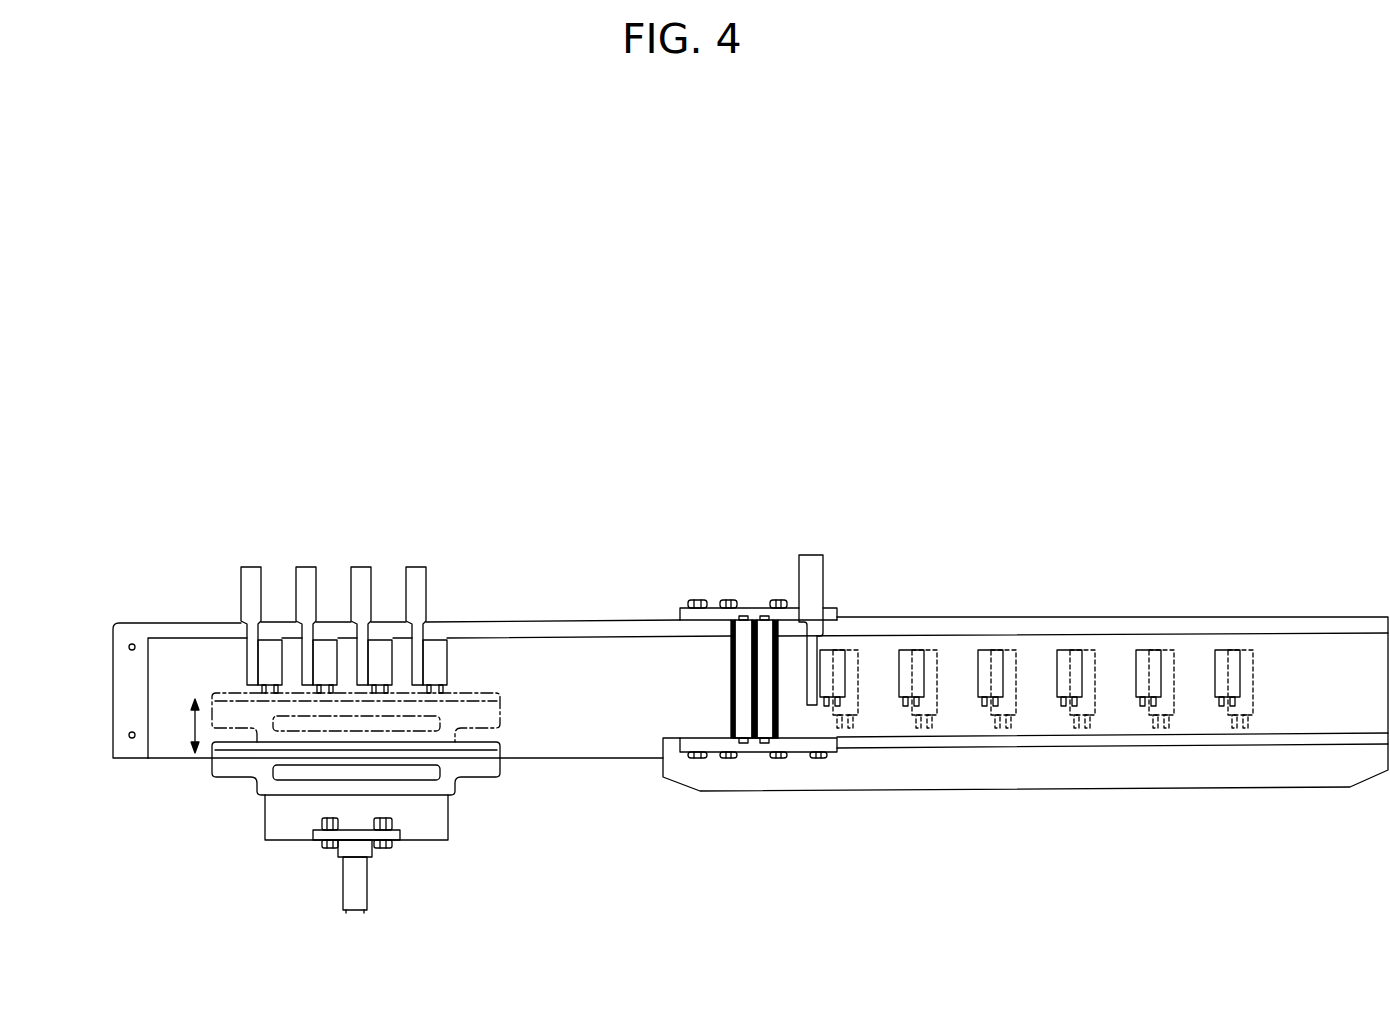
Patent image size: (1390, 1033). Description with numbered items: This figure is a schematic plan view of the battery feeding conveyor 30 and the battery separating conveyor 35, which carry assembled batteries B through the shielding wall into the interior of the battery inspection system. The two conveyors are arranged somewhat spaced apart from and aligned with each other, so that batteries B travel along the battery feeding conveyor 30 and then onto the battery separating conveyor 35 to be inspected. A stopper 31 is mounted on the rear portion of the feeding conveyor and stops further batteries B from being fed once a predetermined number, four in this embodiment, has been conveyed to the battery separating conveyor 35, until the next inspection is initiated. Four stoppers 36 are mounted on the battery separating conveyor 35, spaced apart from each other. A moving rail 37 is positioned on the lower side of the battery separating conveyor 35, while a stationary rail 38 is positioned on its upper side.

The battery feeding conveyor 30 is at (1307, 720).
The stopper 31 is at (818, 582).
The battery separating conveyor 35 is at (173, 718).
The stoppers 36 is at (412, 567).
The moving rail 37 is at (447, 818).
The stationary rail 38 is at (197, 627).
The batteries B is at (448, 658).